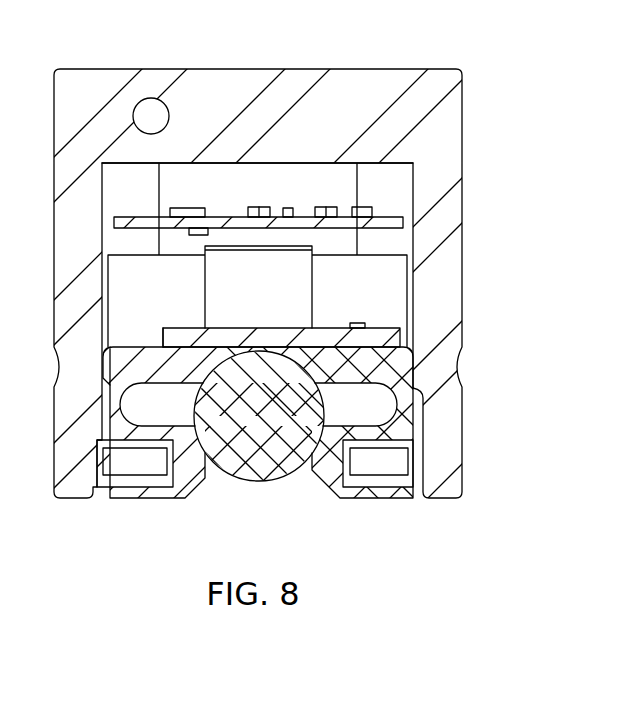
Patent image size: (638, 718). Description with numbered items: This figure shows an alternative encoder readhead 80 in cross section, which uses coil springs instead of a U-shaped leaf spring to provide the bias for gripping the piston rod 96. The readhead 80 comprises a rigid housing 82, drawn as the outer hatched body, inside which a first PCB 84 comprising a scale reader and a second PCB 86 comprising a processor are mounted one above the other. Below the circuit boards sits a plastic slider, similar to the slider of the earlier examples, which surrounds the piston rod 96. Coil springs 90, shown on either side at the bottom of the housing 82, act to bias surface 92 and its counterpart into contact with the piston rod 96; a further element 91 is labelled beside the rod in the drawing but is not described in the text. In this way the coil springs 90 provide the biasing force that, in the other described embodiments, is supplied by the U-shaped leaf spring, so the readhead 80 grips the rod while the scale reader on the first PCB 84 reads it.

The encoder readhead 80 is at (460, 68).
The rigid housing 82 is at (444, 145).
The first PCB 84 is at (340, 338).
The second PCB 86 is at (217, 220).
The coil springs 90 is at (140, 467).
The right clamp portion 91 is at (313, 440).
The surface 92 is at (202, 440).
The piston rod 96 is at (268, 463).